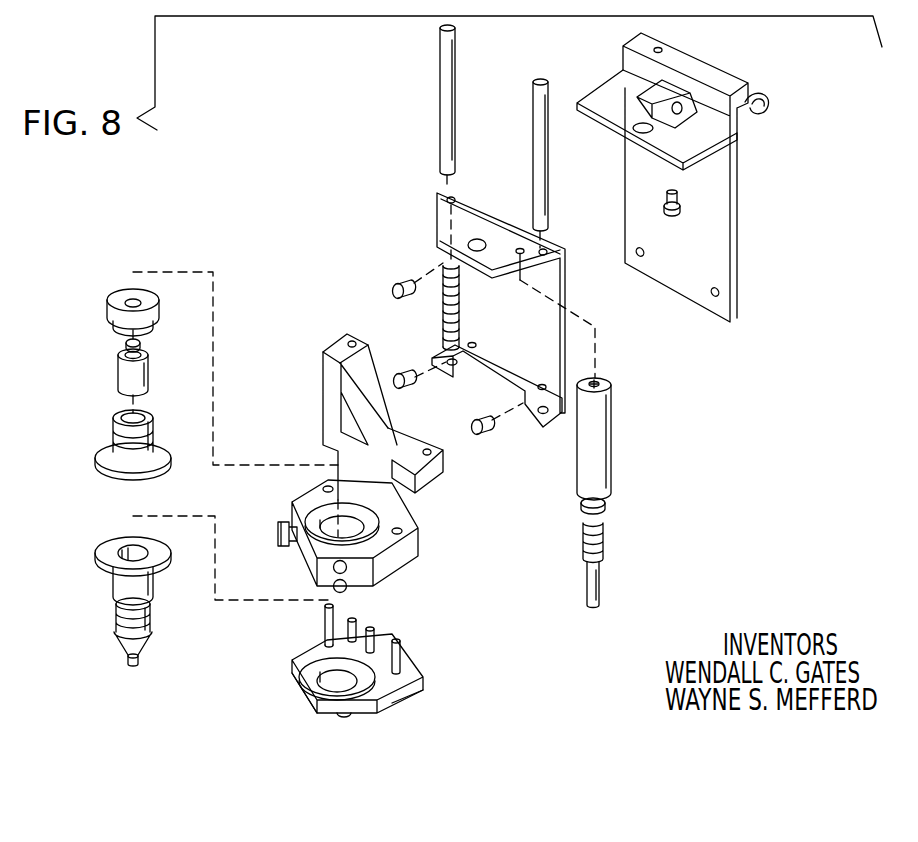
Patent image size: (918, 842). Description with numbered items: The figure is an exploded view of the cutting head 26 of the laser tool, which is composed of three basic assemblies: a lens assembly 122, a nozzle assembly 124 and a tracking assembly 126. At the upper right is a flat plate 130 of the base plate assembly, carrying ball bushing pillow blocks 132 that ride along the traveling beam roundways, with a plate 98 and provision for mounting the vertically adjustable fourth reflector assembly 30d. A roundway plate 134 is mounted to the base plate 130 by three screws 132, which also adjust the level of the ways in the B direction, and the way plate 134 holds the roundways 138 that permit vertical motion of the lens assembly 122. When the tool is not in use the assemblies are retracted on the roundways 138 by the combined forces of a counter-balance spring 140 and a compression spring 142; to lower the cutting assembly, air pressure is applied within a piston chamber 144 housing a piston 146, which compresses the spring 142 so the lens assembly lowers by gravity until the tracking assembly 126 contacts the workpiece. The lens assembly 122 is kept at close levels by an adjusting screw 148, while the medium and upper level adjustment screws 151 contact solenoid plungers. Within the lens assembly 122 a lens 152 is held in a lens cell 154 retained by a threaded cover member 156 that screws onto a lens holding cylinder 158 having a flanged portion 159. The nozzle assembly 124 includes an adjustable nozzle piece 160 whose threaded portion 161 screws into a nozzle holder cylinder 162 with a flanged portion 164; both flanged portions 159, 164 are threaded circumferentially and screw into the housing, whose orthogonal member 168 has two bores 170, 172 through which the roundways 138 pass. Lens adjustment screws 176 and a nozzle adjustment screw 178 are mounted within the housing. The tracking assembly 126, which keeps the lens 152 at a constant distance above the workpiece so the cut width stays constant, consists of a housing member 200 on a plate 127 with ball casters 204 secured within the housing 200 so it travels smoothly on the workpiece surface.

The cutting head 26 is at (278, 434).
The fourth reflector assembly 30d is at (696, 117).
The mounting plate 98 is at (642, 90).
The lens assembly 122 is at (108, 390).
The nozzle assembly 124 is at (102, 586).
The tracking assembly 126 is at (397, 704).
The base plate 127 is at (415, 677).
The flat plate 130 is at (731, 297).
The screws 132 is at (402, 318).
The roundway plate 134 is at (562, 282).
The roundways 138 is at (533, 111).
The counter-balance spring 140 is at (461, 317).
The compression spring 142 is at (608, 549).
The piston chamber 144 is at (603, 407).
The piston 146 is at (610, 513).
The adjusting screw 148 is at (360, 625).
The level adjustment screws 151 is at (378, 636).
The lens 152 is at (125, 342).
The lens cell 154 is at (115, 372).
The threaded cover member 156 is at (108, 318).
The lens holding cylinder 158 is at (112, 429).
The flanged portion 159 is at (97, 456).
The adjustable nozzle piece 160 is at (127, 659).
The threaded portion 161 is at (117, 625).
The nozzle holder cylinder 162 is at (113, 594).
The flanged portion 164 is at (100, 553).
The orthogonal member 168 is at (332, 386).
The bore 170 is at (352, 337).
The bore 172 is at (434, 451).
The lens adjustment screws 176 is at (282, 524).
The nozzle adjustment screw 178 is at (280, 552).
The housing member 200 is at (302, 711).
The ball casters 204 is at (378, 716).